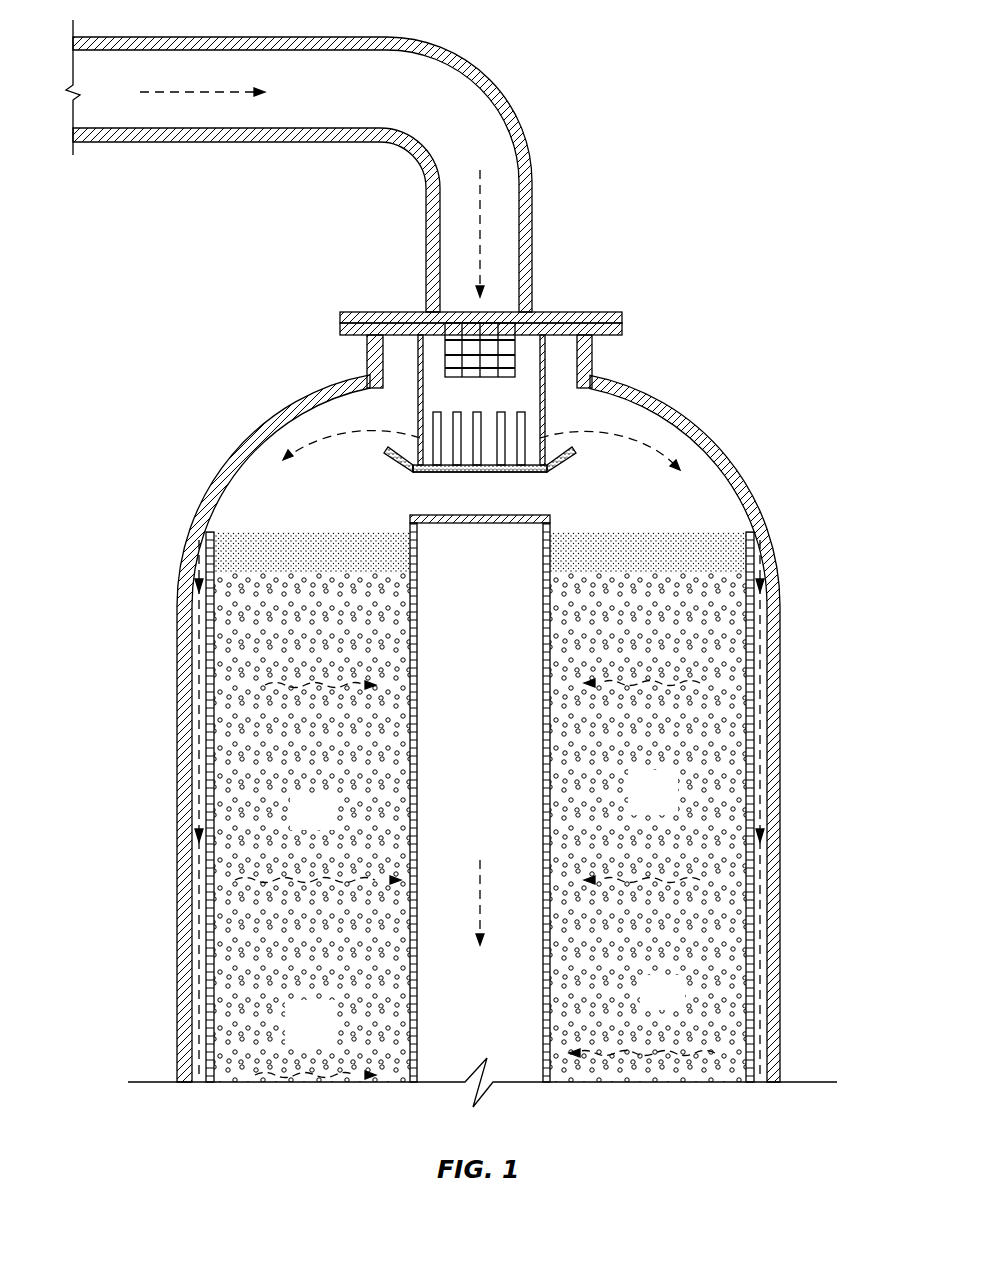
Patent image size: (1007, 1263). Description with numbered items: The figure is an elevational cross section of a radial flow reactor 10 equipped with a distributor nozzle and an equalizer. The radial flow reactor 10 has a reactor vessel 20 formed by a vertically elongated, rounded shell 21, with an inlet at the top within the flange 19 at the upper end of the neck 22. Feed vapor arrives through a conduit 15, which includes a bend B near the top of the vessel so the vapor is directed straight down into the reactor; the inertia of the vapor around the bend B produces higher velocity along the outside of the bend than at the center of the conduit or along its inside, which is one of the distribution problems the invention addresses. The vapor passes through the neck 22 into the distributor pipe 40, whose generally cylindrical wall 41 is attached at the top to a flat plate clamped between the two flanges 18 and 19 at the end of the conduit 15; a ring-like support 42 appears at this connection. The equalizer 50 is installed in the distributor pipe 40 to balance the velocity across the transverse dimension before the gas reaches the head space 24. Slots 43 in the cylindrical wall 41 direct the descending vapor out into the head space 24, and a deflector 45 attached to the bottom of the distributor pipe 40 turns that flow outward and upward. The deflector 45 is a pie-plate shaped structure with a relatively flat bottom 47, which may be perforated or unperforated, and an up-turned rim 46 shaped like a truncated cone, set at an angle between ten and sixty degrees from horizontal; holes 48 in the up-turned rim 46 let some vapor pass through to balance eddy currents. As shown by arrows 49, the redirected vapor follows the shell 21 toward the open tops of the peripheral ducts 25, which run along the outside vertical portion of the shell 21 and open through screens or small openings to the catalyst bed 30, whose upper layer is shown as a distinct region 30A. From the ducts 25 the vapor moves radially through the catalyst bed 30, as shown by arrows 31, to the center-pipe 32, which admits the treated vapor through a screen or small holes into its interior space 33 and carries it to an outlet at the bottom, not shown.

The radial flow reactor 10 is at (750, 100).
The conduit 15 is at (226, 37).
The bend B is at (457, 143).
The flange 18 is at (575, 312).
The flange 19 is at (622, 326).
The reactor vessel 20 is at (217, 410).
The shell 21 is at (226, 455).
The neck 22 is at (592, 366).
The left flange leg 42 is at (345, 336).
The equalizer 50 is at (460, 318).
The head space 24 is at (640, 429).
The peripheral ducts 25 is at (192, 660).
The catalyst bed 30 is at (322, 1037).
The fine upper layer of packed bed 30A is at (718, 552).
The arrows 31 is at (283, 880).
The center-pipe 32 is at (535, 693).
The interior space 33 is at (491, 1034).
The distributor pipe 40 is at (387, 486).
The generally cylindrical wall 41 is at (418, 428).
The slots 43 is at (520, 432).
The deflector 45 is at (415, 473).
The up-turned rim 46 is at (394, 462).
The flat bottom 47 is at (478, 473).
The holes 48 is at (388, 460).
The arrows 49 is at (313, 432).